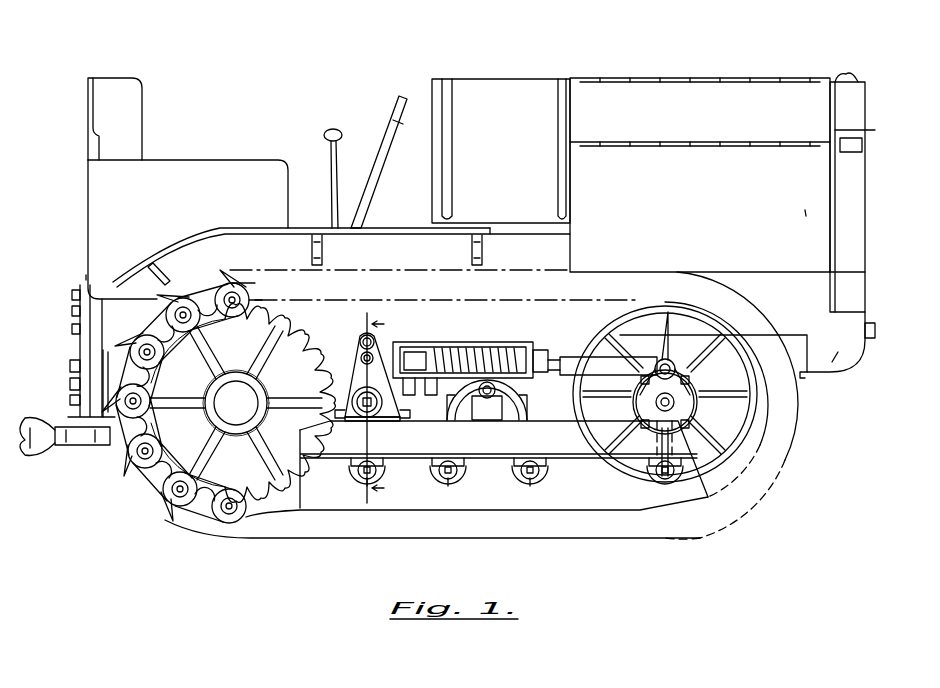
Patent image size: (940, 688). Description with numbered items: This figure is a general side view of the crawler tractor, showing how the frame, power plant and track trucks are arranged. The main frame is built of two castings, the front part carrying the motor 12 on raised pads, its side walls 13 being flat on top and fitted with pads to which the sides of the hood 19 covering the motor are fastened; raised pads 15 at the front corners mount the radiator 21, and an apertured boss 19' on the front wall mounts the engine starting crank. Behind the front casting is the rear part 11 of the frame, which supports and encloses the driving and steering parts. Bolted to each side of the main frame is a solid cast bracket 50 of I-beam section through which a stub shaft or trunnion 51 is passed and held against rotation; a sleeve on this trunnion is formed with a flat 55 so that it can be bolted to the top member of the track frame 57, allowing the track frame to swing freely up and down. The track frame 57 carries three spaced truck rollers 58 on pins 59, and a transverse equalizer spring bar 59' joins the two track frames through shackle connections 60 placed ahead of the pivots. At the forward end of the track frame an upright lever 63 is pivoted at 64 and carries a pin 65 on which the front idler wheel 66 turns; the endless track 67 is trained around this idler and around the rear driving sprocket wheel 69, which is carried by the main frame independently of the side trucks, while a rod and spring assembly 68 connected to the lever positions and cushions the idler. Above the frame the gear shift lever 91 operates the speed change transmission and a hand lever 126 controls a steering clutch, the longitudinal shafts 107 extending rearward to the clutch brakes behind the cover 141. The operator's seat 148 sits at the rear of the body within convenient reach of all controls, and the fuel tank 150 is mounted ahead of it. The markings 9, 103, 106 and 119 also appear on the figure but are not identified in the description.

The section line 9 is at (381, 408).
The rear part 11 is at (112, 311).
The motor 12 is at (726, 100).
The walls 13 is at (838, 357).
The raised pads 15 is at (845, 306).
The hood 19 is at (849, 206).
The apertured boss 19' is at (889, 330).
The radiator 21 is at (850, 107).
The brackets 50 is at (362, 368).
The stub shaft or trunnion 51 is at (376, 420).
The flat 55 is at (352, 421).
The track frame 57 is at (598, 440).
The truck rollers 58 is at (358, 488).
The pins 59 is at (448, 492).
The transverse equalizer spring bar 59' is at (491, 413).
The shackle connections 60 is at (502, 392).
The upright lever 63 is at (657, 436).
The pivot 64 is at (665, 474).
The pin 65 is at (686, 402).
The front idler wheel 66 is at (768, 410).
The endless track 67 is at (790, 460).
The rod and spring assembly 68 is at (595, 345).
The driving sprocket wheels 69 is at (296, 332).
The gear shift lever 91 is at (338, 146).
The rear plate 103 is at (80, 350).
The rear brackets 106 is at (70, 378).
The longitudinal shafts 107 is at (45, 453).
The fender 119 is at (262, 232).
The hand lever 126 is at (371, 206).
The cover 141 is at (88, 278).
The operator's seat 148 is at (168, 170).
The fuel tank 150 is at (488, 100).